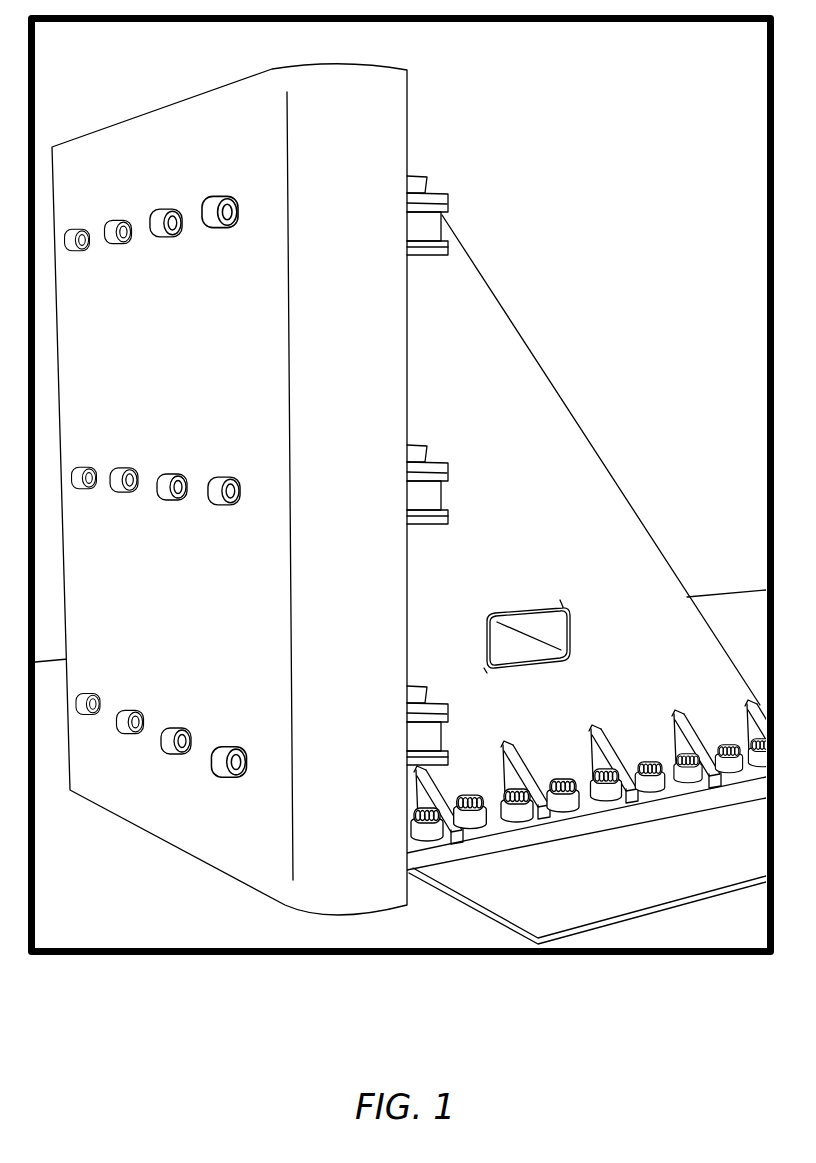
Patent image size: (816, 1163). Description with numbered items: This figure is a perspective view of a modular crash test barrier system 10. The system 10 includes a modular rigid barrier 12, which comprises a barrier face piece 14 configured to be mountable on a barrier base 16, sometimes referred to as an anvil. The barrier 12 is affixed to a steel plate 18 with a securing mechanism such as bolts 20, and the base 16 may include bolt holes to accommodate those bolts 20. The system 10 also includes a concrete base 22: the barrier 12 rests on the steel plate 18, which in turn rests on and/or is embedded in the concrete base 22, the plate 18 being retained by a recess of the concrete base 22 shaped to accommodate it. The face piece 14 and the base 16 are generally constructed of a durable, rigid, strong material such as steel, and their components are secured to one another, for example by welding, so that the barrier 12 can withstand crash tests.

The modular crash test barrier system 10 is at (626, 213).
The modular rigid barrier 12 is at (412, 137).
The barrier face piece 14 is at (360, 424).
The barrier base 16 is at (533, 513).
The steel plate 18 is at (601, 888).
The bolts 20 is at (642, 758).
The concrete base 22 is at (749, 640).